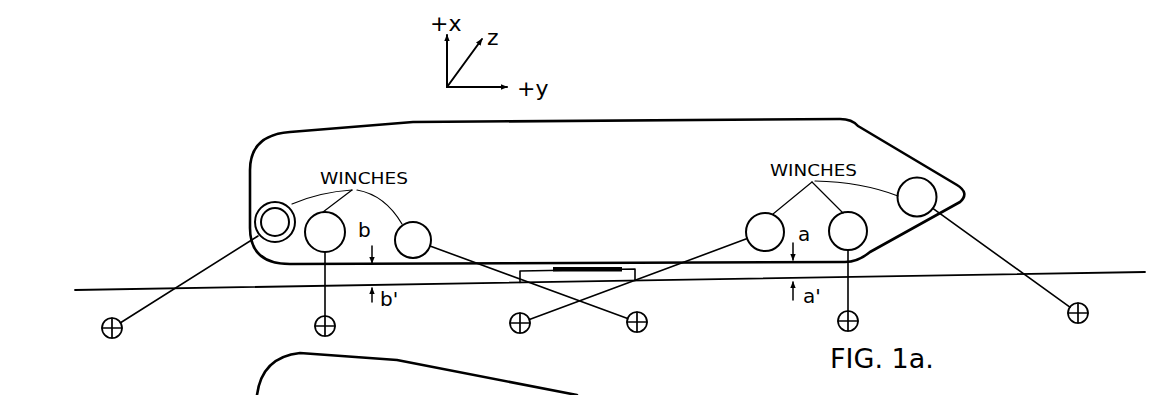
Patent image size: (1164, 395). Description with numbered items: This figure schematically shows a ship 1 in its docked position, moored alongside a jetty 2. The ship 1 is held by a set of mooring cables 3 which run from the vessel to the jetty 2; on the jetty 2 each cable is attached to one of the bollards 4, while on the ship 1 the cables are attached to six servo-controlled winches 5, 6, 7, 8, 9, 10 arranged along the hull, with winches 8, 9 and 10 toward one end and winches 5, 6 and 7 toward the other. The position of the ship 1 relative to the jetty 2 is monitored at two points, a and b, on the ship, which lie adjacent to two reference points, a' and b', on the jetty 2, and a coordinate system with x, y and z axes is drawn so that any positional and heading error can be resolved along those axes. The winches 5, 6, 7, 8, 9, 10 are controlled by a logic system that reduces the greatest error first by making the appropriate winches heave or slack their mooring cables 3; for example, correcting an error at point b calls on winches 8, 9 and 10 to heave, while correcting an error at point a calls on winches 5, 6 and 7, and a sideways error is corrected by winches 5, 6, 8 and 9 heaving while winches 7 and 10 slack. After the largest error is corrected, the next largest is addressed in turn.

The ship 1 is at (802, 126).
The jetty 2 is at (95, 323).
The mooring cables 3 is at (325, 275).
The bollards 4 is at (314, 325).
The servo-controlled winch 5 is at (917, 197).
The servo-controlled winch 6 is at (848, 231).
The servo-controlled winch 7 is at (765, 232).
The servo-controlled winch 8 is at (413, 240).
The servo-controlled winch 9 is at (325, 232).
The servo-controlled winch 10 is at (275, 222).